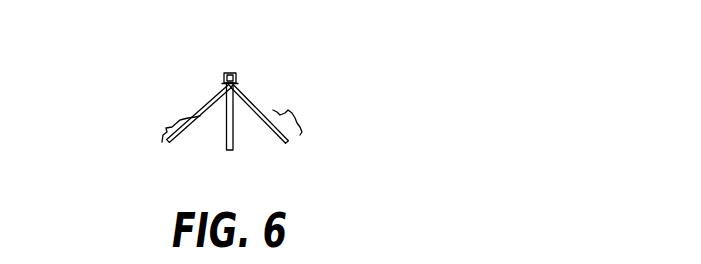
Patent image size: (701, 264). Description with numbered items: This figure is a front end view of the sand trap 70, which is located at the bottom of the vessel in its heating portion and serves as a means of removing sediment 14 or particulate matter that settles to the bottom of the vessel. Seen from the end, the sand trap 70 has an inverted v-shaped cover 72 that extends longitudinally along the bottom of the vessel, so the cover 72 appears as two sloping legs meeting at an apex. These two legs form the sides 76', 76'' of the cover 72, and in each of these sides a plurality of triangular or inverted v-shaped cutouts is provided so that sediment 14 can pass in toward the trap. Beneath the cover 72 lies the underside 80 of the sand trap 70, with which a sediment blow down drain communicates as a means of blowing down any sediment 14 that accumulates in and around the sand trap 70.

The sediment 14 is at (300, 127).
The sand trap 70 is at (289, 71).
The inverted v-shaped cover 72 is at (246, 91).
The side of the cover 76' is at (294, 105).
The side of the cover 76'' is at (179, 101).
The underside of the sand trap 80 is at (262, 143).